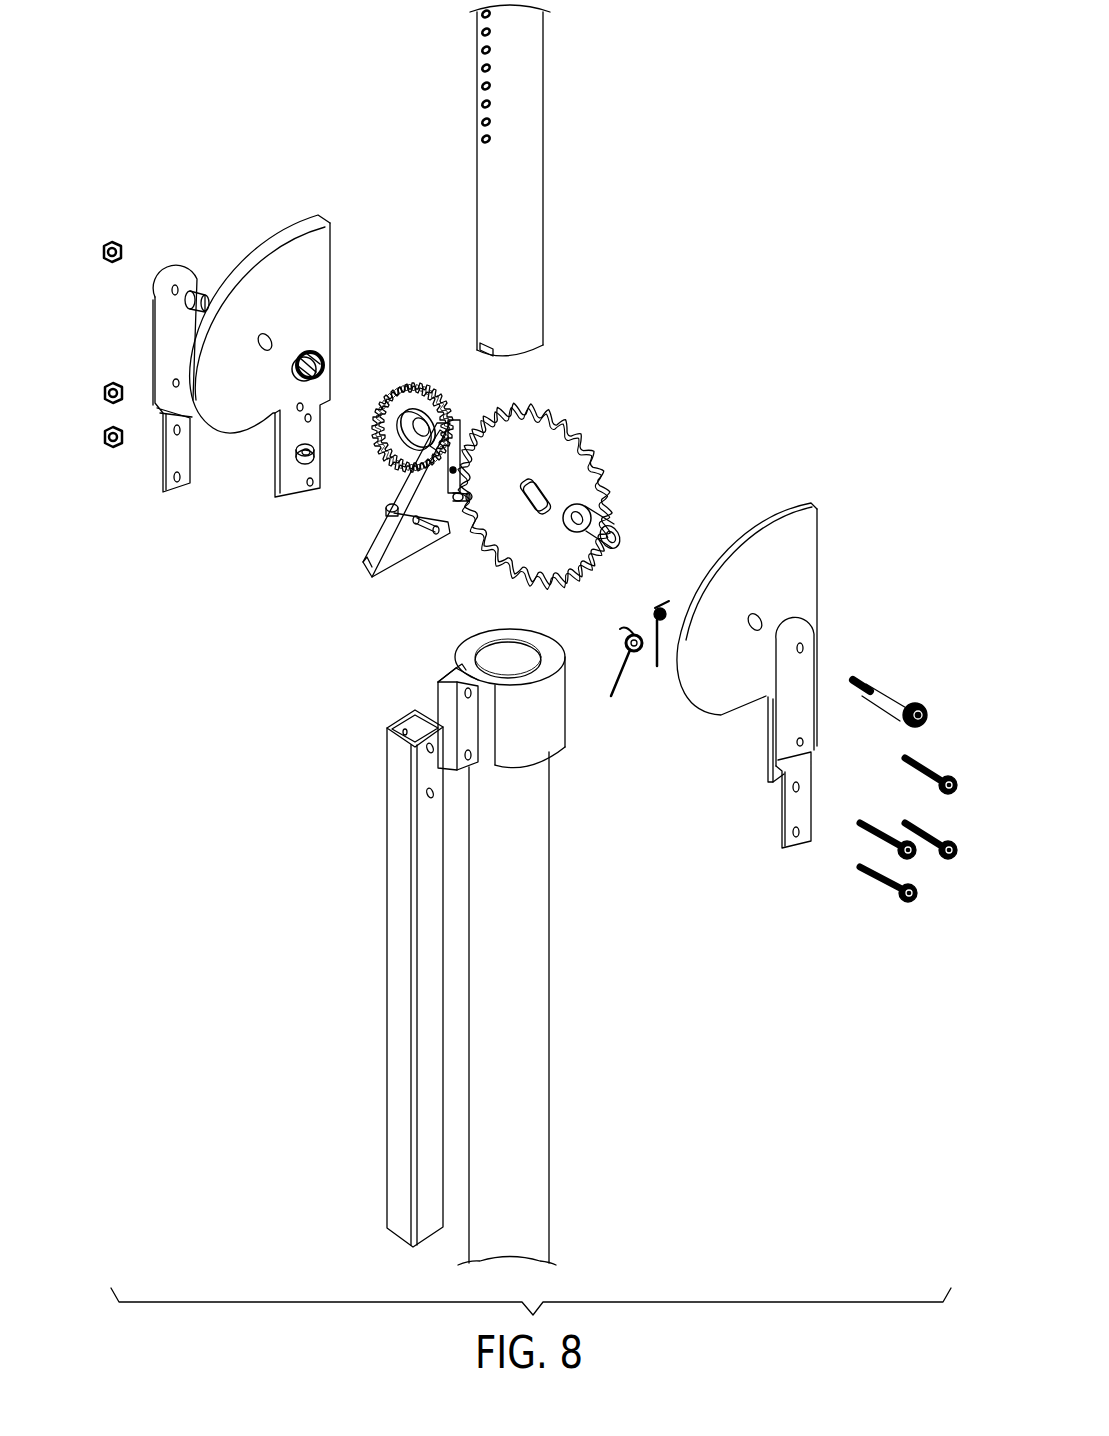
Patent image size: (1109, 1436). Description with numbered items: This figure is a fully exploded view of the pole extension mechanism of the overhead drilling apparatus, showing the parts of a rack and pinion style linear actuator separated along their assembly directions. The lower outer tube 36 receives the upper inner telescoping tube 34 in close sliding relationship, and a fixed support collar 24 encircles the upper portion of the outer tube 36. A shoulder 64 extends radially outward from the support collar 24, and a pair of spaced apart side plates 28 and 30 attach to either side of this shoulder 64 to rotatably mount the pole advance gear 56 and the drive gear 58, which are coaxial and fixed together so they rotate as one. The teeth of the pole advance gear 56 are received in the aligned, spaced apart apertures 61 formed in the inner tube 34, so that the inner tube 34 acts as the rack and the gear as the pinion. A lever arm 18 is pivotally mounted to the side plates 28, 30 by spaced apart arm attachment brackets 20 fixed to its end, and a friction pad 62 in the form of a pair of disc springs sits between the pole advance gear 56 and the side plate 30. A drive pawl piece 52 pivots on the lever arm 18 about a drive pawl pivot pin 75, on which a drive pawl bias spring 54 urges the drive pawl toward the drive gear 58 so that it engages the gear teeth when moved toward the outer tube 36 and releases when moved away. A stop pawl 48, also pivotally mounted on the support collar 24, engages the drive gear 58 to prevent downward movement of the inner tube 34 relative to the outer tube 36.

The lever arm 18 is at (395, 898).
The arm attachment brackets 20 is at (165, 380).
The support collar 24 is at (557, 735).
The side plate 28 is at (777, 537).
The side plate 30 is at (310, 247).
The inner telescoping tube 34 is at (530, 275).
The outer tube 36 is at (533, 1160).
The stop pawl 48 is at (456, 462).
The drive pawl piece 52 is at (396, 560).
The drive pawl bias spring 54 is at (633, 730).
The pole advance gear 56 is at (588, 422).
The drive gear 58 is at (437, 403).
The apertures 61 is at (483, 82).
The friction pad 62 is at (327, 353).
The shoulder 64 is at (445, 712).
The drive pawl pivot pin 75 is at (450, 493).